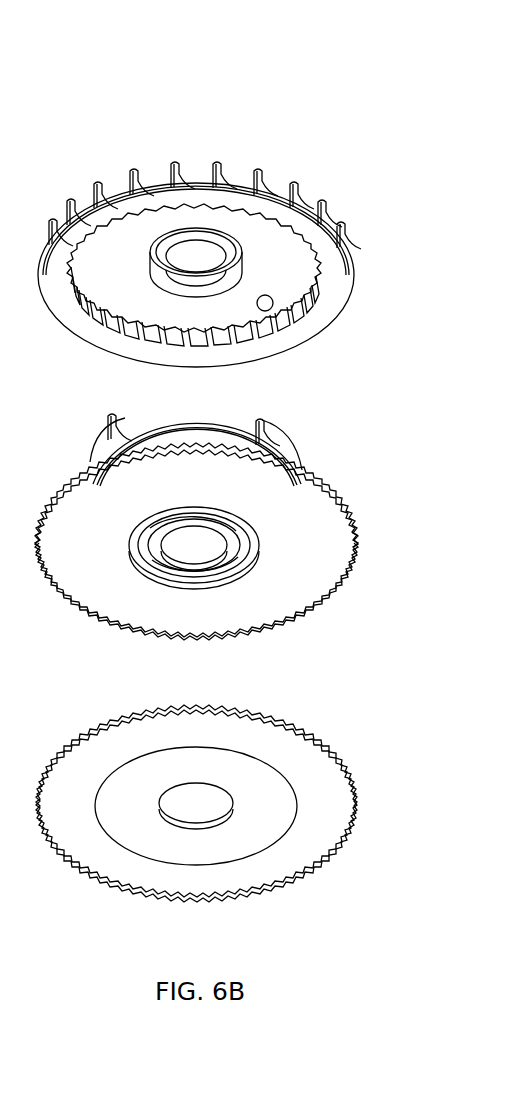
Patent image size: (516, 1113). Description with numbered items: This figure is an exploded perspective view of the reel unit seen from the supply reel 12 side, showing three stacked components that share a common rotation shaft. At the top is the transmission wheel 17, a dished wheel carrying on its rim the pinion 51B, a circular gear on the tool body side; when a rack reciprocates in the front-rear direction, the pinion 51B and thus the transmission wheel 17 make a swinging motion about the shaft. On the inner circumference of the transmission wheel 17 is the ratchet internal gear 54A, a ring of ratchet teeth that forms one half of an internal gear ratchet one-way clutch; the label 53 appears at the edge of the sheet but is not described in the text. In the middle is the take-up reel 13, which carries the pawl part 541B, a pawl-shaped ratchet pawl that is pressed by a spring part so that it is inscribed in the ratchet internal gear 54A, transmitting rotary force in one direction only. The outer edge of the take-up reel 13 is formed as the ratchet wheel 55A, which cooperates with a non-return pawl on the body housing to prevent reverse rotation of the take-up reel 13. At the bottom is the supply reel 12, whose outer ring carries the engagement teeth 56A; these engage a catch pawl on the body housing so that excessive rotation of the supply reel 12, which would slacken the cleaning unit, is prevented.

The transmission wheel 17 is at (248, 219).
The pinion 51B is at (216, 162).
The ratchet internal gear 54A is at (290, 305).
The ratchet member 53 is at (151, 438).
The take-up reel 13 is at (207, 525).
The pawl part 541B is at (130, 414).
The ratchet wheel 55A is at (105, 582).
The supply reel 12 is at (211, 795).
The engagement teeth 56A is at (105, 860).